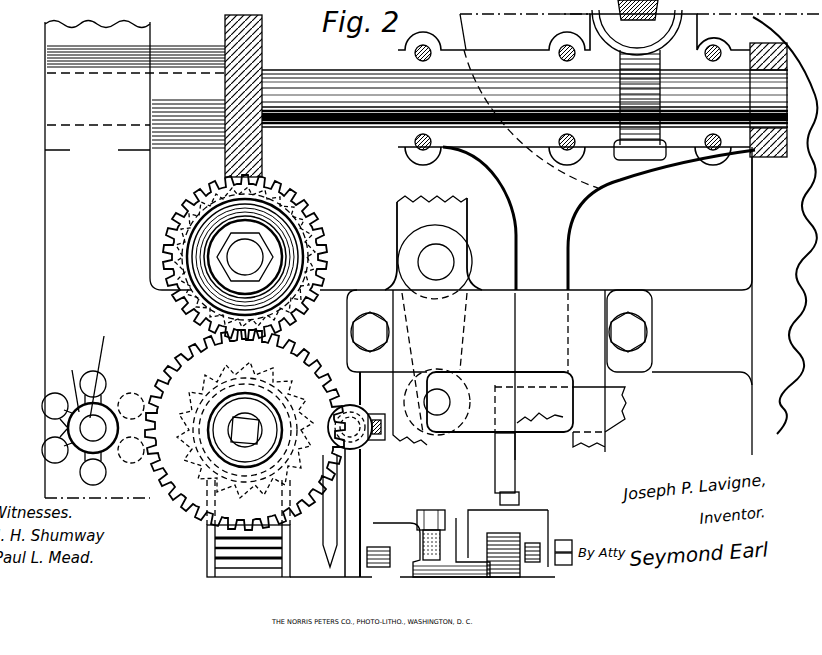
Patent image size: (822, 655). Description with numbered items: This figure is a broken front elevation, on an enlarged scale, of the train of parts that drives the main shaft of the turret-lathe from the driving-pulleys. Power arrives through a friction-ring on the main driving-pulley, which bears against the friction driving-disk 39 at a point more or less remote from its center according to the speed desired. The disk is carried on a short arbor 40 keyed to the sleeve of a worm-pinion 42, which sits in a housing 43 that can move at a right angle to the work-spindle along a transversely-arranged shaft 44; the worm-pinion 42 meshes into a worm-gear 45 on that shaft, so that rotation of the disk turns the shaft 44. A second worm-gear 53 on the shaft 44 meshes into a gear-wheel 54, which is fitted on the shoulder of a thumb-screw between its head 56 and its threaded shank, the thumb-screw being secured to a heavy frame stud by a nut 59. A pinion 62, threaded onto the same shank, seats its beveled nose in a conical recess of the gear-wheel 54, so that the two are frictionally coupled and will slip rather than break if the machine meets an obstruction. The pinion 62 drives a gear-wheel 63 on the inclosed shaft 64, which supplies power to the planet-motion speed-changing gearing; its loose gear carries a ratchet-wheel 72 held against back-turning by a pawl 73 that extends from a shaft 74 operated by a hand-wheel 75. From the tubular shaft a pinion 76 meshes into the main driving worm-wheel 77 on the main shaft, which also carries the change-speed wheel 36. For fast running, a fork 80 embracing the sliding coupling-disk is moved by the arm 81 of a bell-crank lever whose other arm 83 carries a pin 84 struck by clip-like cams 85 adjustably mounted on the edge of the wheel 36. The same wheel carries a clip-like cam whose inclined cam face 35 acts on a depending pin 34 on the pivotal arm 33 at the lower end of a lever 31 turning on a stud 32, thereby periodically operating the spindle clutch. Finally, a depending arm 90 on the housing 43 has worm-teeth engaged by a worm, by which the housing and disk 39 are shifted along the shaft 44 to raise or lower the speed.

The lever 31 is at (433, 320).
The stud 32 is at (440, 262).
The pivotal arm 33 is at (488, 376).
The depending pin 34 is at (500, 445).
The cam face 35 is at (517, 492).
The change-speed wheel 36 is at (486, 543).
The friction driving-disk 39 is at (641, 101).
The arbor 40 is at (612, 8).
The worm-pinion 42 is at (637, 27).
The housing 43 is at (574, 89).
The transversely-arranged shaft 44 is at (345, 82).
The worm-gear 45 is at (620, 86).
The worm-gear 53 is at (263, 44).
The gear-wheel 54 is at (214, 186).
The head 56 is at (268, 224).
The nut 59 is at (256, 251).
The pinion 62 is at (304, 270).
The gear-wheel 63 is at (292, 348).
The inclosed shaft 64 is at (245, 429).
The ratchet-wheel 72 is at (284, 381).
The pawl 73 is at (134, 385).
The shaft 74 is at (67, 382).
The hand-wheel 75 is at (100, 368).
The pinion 76 is at (200, 460).
The main driving worm-wheel 77 is at (210, 544).
The fork 80 is at (292, 364).
The arm 81 is at (346, 482).
The arm 83 is at (364, 542).
The pin 84 is at (380, 548).
The clip-like cams 85 is at (384, 550).
The depending arm 90 is at (599, 218).